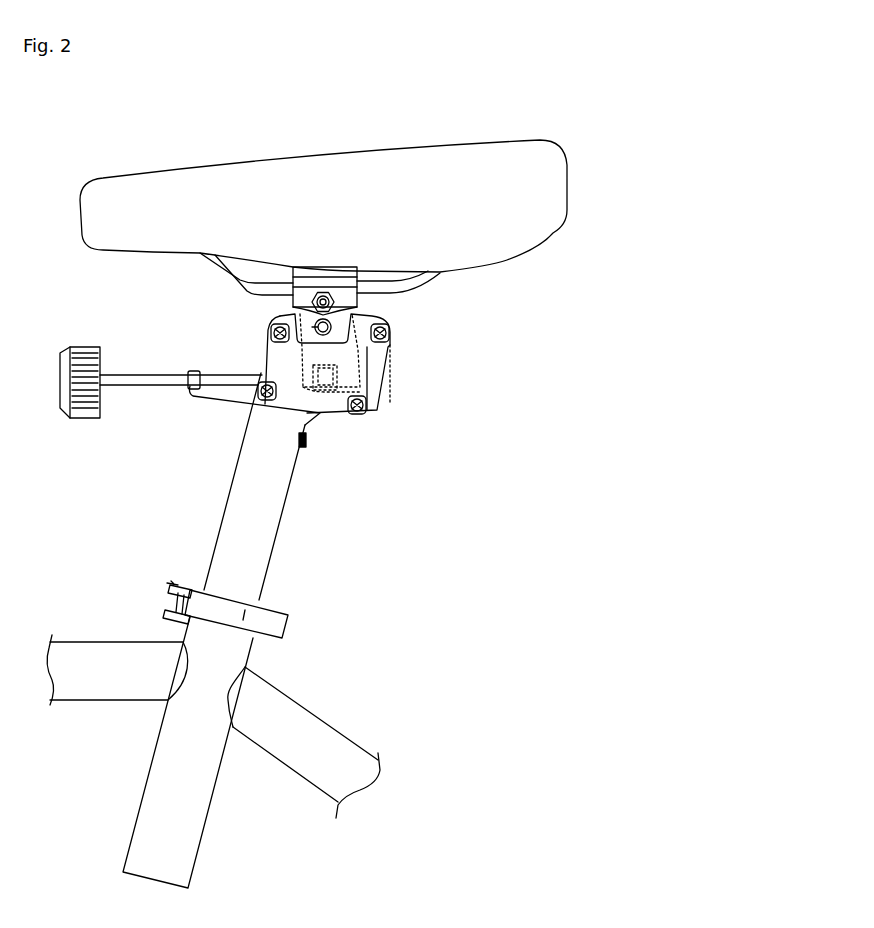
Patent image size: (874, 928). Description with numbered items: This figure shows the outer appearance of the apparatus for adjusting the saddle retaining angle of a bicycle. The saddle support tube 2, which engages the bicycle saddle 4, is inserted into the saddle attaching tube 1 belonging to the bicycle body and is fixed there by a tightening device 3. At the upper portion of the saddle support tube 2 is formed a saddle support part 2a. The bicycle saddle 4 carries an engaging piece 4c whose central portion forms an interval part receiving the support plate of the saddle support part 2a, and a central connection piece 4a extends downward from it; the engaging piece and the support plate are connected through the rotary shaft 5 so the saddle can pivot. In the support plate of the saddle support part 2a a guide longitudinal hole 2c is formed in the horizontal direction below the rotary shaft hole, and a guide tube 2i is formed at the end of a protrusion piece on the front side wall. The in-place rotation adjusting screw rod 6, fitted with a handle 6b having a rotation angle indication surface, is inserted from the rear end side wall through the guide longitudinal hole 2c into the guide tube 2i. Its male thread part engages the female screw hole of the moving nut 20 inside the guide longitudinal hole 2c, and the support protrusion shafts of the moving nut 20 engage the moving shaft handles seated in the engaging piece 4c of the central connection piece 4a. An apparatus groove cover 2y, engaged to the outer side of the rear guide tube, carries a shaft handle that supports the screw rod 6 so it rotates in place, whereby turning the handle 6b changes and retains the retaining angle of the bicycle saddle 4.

The saddle attaching tube 1 is at (203, 798).
The saddle support tube 2 is at (278, 517).
The tightening device 3 is at (280, 623).
The bicycle saddle 4 is at (377, 156).
The central connection piece 4a is at (318, 296).
The engaging piece 4c is at (360, 308).
The rotary shaft 5 is at (313, 300).
The in-place rotation adjusting screw rod 6 is at (127, 375).
The handle 6b is at (60, 362).
The guide tube 2i is at (193, 372).
The saddle support part 2a is at (272, 333).
The moving nut 20 is at (362, 362).
The apparatus groove cover 2y is at (382, 377).
The guide longitudinal hole 2c is at (362, 388).